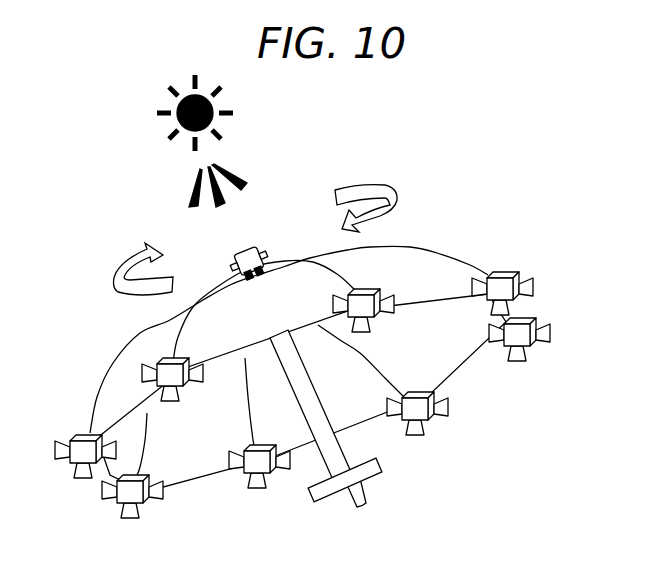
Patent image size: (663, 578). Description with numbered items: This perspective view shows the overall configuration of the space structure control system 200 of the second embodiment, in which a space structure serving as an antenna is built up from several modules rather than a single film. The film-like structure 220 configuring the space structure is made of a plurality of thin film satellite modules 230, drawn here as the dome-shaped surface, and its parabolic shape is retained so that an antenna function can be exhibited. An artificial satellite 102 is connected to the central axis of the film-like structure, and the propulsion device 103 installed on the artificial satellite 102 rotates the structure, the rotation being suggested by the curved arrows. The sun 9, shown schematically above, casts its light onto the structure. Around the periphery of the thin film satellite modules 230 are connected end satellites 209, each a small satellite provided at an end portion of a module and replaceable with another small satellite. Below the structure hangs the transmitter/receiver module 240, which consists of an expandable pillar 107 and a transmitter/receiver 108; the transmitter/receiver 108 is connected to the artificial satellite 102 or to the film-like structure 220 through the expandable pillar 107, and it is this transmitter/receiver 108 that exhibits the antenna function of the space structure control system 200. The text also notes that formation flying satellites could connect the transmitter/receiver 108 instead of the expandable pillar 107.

The sun 9 is at (228, 103).
The artificial satellite 102 is at (250, 250).
The propulsion device 103 is at (235, 267).
The space structure control system 200 is at (288, 336).
The end satellite 209 is at (517, 270).
The film-like structure 220 is at (433, 253).
The thin film satellite module 230 is at (133, 380).
The expandable pillar 107 is at (357, 440).
The transmitter/receiver 108 is at (378, 480).
The transmitter/receiver module 240 is at (431, 430).